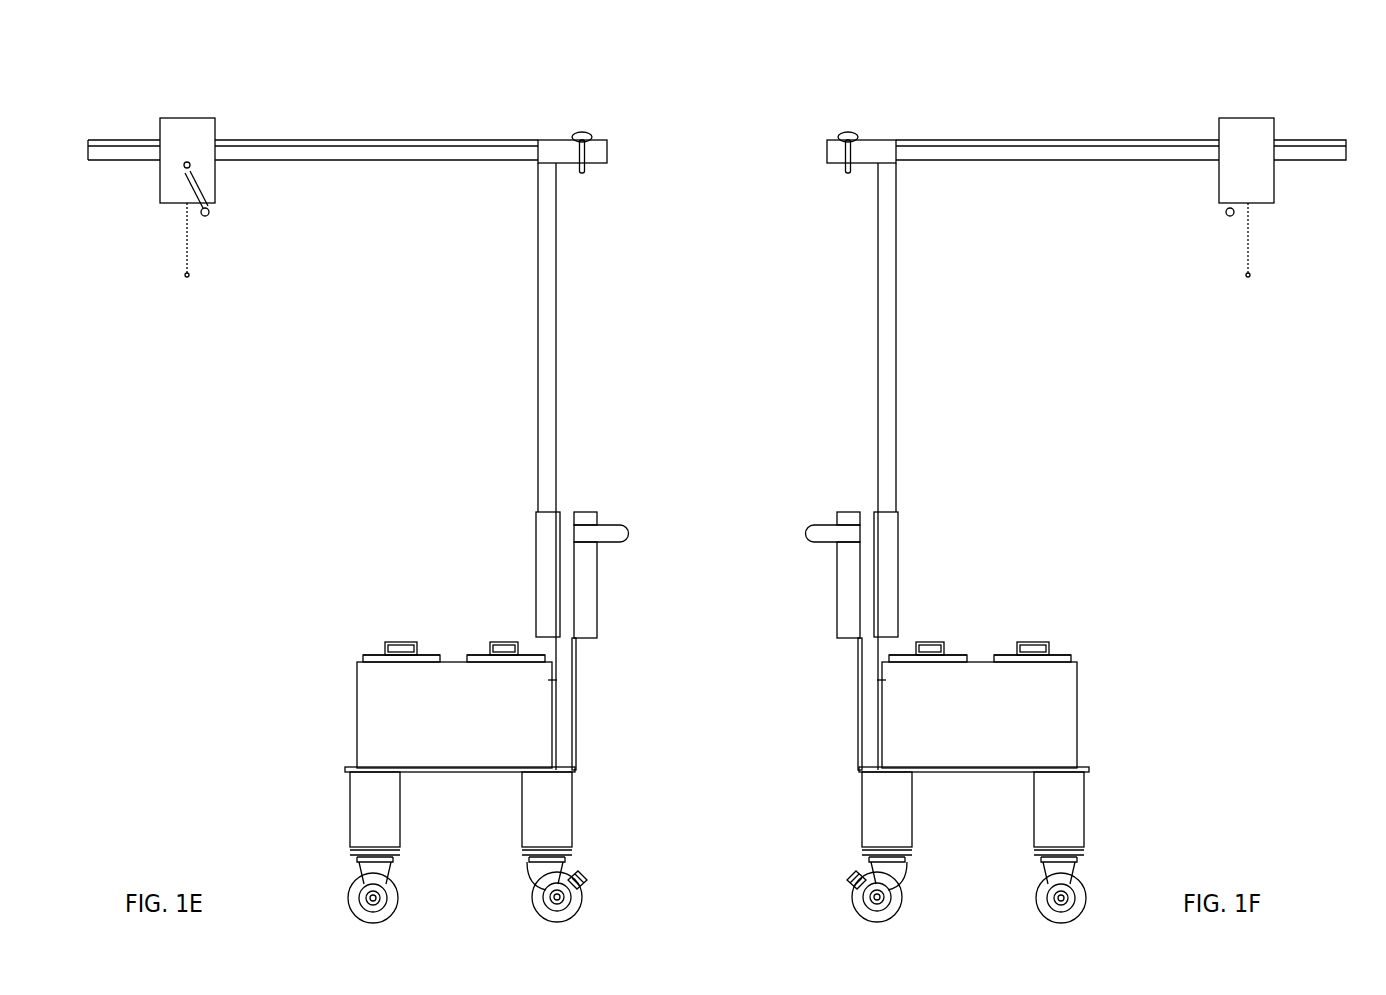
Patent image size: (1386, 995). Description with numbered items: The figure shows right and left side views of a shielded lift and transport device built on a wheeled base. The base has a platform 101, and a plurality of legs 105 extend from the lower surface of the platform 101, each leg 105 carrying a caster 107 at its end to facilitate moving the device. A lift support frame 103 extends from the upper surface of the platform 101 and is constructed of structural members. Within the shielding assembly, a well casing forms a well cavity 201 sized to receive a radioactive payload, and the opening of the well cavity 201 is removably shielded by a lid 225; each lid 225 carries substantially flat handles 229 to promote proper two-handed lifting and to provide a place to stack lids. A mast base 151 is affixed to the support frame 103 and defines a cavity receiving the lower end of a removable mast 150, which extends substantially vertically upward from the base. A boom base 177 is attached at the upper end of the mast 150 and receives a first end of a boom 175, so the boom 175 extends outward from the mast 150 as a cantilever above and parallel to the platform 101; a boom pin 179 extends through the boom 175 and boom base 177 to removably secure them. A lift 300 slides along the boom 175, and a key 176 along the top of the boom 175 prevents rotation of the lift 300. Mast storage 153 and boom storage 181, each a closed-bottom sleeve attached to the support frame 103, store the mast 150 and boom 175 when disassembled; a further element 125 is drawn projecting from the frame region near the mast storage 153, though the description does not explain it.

In FIG. 1E, the platform 101 is at (580, 768).
In FIG. 1F, the platform 101 is at (854, 768).
In FIG. 1E, the lift support frame 103 is at (578, 653).
In FIG. 1F, the lift support frame 103 is at (856, 653).
In FIG. 1E, the legs 105 is at (543, 801).
In FIG. 1F, the legs 105 is at (1064, 812).
In FIG. 1E, the caster 107 is at (547, 882).
In FIG. 1F, the caster 107 is at (1061, 898).
In FIG. 1E, the arm 125 is at (607, 532).
In FIG. 1F, the arm 125 is at (833, 532).
In FIG. 1E, the mast 150 is at (548, 268).
In FIG. 1F, the mast 150 is at (885, 268).
In FIG. 1E, the mast base 151 is at (550, 522).
In FIG. 1F, the mast base 151 is at (885, 522).
In FIG. 1E, the mast storage 153 is at (585, 520).
In FIG. 1E, the boom 175 is at (444, 138).
In FIG. 1F, the boom 175 is at (980, 138).
In FIG. 1E, the key 176 is at (137, 140).
In FIG. 1F, the key 176 is at (1292, 140).
In FIG. 1E, the boom base 177 is at (597, 155).
In FIG. 1F, the boom base 177 is at (837, 155).
In FIG. 1E, the boom pin 179 is at (592, 135).
In FIG. 1F, the boom pin 179 is at (842, 135).
In FIG. 1F, the boom storage 181 is at (843, 518).
In FIG. 1E, the well cavity 201 is at (525, 731).
In FIG. 1F, the well cavity 201 is at (909, 731).
In FIG. 1E, the lid 225 is at (478, 655).
In FIG. 1F, the lid 225 is at (1063, 655).
In FIG. 1E, the handle 229 is at (510, 640).
In FIG. 1F, the handle 229 is at (1030, 640).
In FIG. 1E, the lift 300 is at (187, 118).
In FIG. 1F, the lift 300 is at (1248, 118).